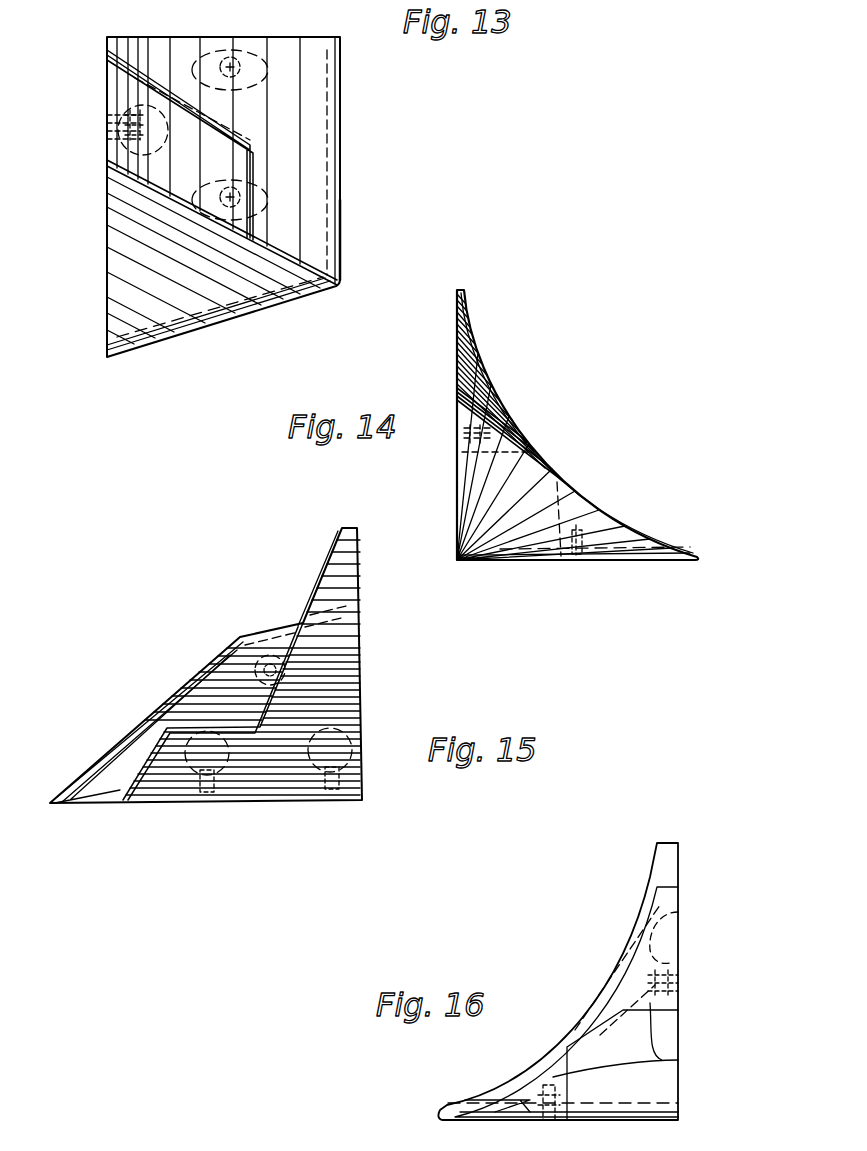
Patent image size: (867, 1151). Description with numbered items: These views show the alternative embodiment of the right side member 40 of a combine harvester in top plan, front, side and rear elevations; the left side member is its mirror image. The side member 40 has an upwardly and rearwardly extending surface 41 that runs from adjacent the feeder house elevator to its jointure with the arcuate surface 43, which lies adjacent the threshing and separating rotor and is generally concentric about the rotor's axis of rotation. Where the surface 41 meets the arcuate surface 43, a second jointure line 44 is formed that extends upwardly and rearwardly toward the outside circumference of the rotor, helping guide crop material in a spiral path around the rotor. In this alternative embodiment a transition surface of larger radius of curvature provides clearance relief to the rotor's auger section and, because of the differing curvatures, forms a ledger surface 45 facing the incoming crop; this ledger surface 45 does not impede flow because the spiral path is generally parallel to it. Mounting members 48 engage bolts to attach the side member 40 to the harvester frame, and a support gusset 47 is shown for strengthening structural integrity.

In FIG. 13, the side member 40 is at (397, 153).
In FIG. 14, the side member 40 is at (579, 352).
In FIG. 15, the side member 40 is at (158, 627).
In FIG. 16, the side member 40 is at (600, 908).
In FIG. 13, the upwardly and rearwardly extending surface 41 is at (160, 297).
In FIG. 14, the upwardly and rearwardly extending surface 41 is at (532, 533).
In FIG. 15, the upwardly and rearwardly extending surface 41 is at (110, 757).
In FIG. 13, the arcuate surface 43 is at (322, 107).
In FIG. 14, the arcuate surface 43 is at (555, 455).
In FIG. 15, the arcuate surface 43 is at (343, 657).
In FIG. 16, the arcuate surface 43 is at (598, 976).
In FIG. 13, the second jointure line 44 is at (313, 262).
In FIG. 13, the ledger surface 45 is at (128, 76).
In FIG. 14, the ledger surface 45 is at (463, 356).
In FIG. 13, the support gusset 47 is at (148, 168).
In FIG. 14, the support gusset 47 is at (458, 397).
In FIG. 15, the support gusset 47 is at (272, 655).
In FIG. 16, the support gusset 47 is at (682, 915).
In FIG. 16, the mounting members 48 is at (663, 1064).